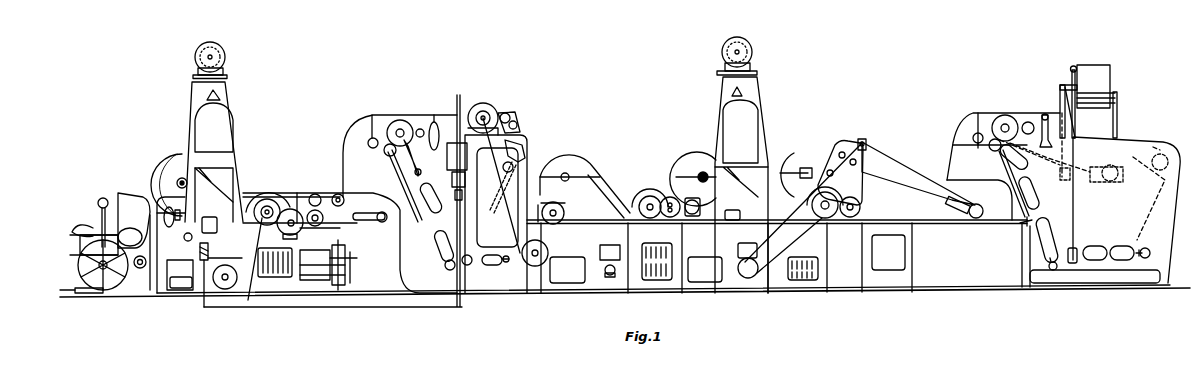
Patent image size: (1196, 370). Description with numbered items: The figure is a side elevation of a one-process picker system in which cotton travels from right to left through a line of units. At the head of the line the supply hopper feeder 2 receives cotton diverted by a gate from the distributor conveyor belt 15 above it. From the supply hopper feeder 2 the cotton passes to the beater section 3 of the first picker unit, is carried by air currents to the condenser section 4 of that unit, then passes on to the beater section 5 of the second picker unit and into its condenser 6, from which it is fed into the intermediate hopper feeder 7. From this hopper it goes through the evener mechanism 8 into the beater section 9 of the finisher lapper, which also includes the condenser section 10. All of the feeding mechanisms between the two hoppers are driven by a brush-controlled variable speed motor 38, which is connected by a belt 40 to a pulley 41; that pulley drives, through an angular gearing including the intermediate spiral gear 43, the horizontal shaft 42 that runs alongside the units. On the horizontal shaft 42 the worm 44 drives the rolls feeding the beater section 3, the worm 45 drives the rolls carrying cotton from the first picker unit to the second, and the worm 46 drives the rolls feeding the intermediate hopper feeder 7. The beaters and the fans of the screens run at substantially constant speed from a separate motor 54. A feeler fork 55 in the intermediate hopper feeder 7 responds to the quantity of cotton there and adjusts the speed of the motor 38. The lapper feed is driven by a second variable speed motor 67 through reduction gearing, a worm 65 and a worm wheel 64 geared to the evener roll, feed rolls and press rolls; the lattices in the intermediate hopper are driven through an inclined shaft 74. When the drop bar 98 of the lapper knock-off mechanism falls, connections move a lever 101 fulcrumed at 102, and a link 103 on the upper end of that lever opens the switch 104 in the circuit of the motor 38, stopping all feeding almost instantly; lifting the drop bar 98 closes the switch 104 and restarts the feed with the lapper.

The supply hopper feeder 2 is at (1136, 157).
The beater section 3 is at (791, 165).
The condenser section 4 is at (702, 150).
The beater section 5 is at (650, 189).
The condenser 6 is at (572, 152).
The intermediate hopper feeder 7 is at (522, 145).
The evener mechanism 8 is at (320, 307).
The beater section 9 is at (250, 195).
The condenser section 10 is at (172, 160).
The conveyor belt 15 is at (1110, 98).
The motor 38 is at (483, 108).
The belt 40 is at (515, 229).
The pulley 41 is at (547, 262).
The horizontal shaft 42 is at (610, 258).
The intermediate spiral gear 43 is at (514, 252).
The worm 44 is at (847, 225).
The worm 45 is at (668, 225).
The worm 46 is at (553, 226).
The motor 54 is at (752, 48).
The feeler fork 55 is at (500, 191).
The worm wheel 64 is at (291, 210).
The worm 65 is at (303, 231).
The motor 67 is at (347, 256).
The inclined shaft 74 is at (395, 180).
The drop bar 98 is at (157, 262).
The lever 101 is at (243, 205).
The fulcrum 102 is at (262, 265).
The link 103 is at (208, 250).
The switch 104 is at (183, 275).